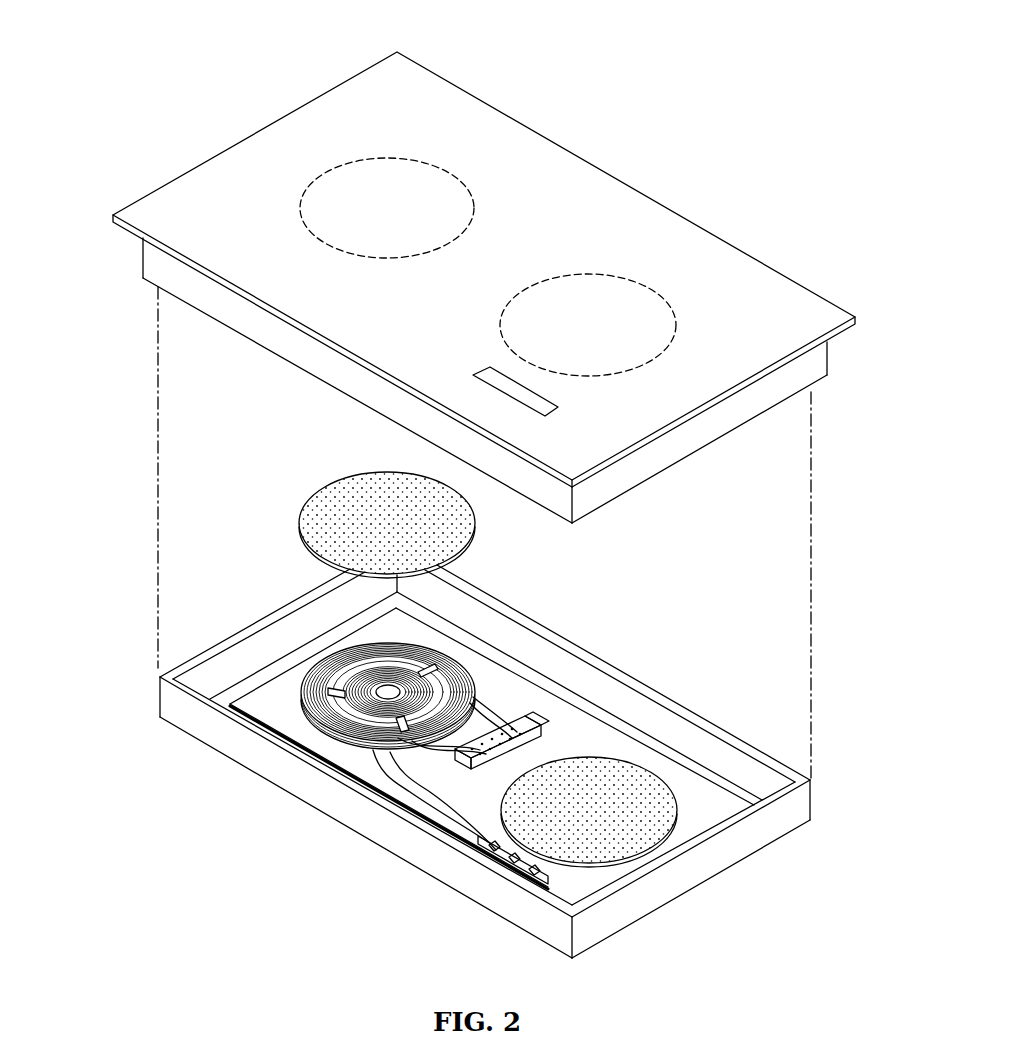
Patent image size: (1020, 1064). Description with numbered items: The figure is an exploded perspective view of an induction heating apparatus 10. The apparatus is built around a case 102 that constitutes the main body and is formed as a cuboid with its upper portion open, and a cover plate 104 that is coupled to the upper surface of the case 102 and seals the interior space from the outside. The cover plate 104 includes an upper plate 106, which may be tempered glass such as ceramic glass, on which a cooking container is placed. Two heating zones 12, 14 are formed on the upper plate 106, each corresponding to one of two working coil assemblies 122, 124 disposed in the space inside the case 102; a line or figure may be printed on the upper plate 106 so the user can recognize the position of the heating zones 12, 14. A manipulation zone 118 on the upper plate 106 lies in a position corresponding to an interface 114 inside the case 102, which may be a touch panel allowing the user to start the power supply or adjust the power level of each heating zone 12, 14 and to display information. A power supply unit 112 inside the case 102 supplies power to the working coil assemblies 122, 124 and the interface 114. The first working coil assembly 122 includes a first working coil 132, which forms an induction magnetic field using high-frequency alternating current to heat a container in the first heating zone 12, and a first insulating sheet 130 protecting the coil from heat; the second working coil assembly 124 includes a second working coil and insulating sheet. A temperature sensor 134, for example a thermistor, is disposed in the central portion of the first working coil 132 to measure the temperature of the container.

The induction heating apparatus 10 is at (588, 133).
The first heating zone 12 is at (424, 163).
The second heating zone 14 is at (624, 278).
The case 102 is at (403, 843).
The cover plate 104 is at (143, 258).
The upper plate 106 is at (760, 380).
The power supply unit 112 is at (533, 723).
The interface 114 is at (517, 872).
The manipulation zone 118 is at (553, 413).
The first working coil assembly 122 is at (306, 740).
The second working coil assembly 124 is at (605, 880).
The first insulating sheet 130 is at (322, 510).
The first working coil 132 is at (313, 686).
The temperature sensor 134 is at (395, 690).